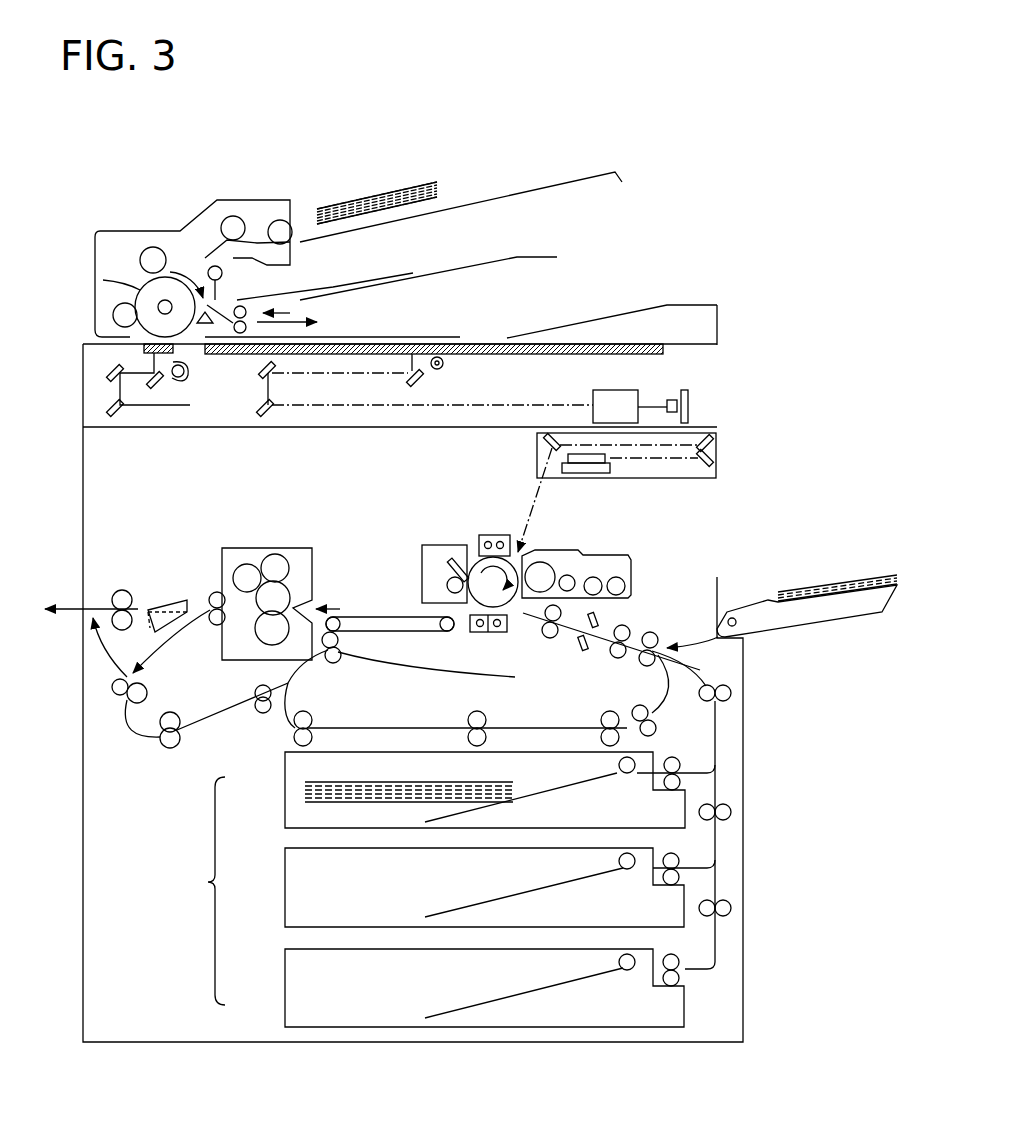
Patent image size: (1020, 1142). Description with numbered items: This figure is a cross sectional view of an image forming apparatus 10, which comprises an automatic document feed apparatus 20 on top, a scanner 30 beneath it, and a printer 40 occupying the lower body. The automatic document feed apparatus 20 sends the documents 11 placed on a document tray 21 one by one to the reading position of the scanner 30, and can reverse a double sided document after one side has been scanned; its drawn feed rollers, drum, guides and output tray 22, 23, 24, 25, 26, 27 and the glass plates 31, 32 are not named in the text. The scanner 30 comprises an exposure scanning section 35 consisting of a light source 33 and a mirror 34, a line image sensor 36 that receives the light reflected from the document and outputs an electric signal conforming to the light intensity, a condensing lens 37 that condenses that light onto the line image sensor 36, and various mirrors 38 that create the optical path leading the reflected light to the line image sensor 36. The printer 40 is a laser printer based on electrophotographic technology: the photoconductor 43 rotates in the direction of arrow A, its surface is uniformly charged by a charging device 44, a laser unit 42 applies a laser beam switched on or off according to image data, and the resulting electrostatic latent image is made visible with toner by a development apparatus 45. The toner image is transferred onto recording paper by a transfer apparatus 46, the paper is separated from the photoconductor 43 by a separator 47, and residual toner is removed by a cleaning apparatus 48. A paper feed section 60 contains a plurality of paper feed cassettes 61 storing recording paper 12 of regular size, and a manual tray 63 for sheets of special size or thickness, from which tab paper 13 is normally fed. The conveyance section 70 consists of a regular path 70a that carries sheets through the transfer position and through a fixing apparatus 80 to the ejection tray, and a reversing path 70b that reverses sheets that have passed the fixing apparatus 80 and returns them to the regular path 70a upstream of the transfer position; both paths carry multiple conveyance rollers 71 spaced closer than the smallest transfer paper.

The image forming apparatus 10 is at (645, 140).
The documents 11 is at (413, 200).
The recording paper 12 is at (352, 803).
The tab paper 13 is at (845, 590).
The automatic document feed apparatus 20 is at (317, 175).
The document tray 21 is at (563, 183).
The pickup rollers 22 is at (278, 220).
The feed drum 23 is at (135, 298).
The pinch rollers 24 is at (140, 260).
The document conveyance path 25 is at (180, 263).
The discharge rollers 26 is at (240, 306).
The document discharge tray 27 is at (535, 257).
The scanner 30 is at (722, 376).
The document reading glass 31 is at (142, 348).
The platen glass 32 is at (482, 344).
The light source 33 is at (415, 344).
The mirror 34 is at (420, 384).
The exposure scanning section 35 is at (444, 365).
The line image sensor 36 is at (684, 390).
The condensing lens 37 is at (614, 390).
The mirrors 38 is at (258, 378).
The printer 40 is at (746, 778).
The laser unit 42 is at (667, 480).
The photoconductor 43 is at (477, 561).
The charging device 44 is at (493, 535).
The development apparatus 45 is at (602, 553).
The transfer apparatus 46 is at (497, 632).
The separator 47 is at (480, 632).
The cleaning apparatus 48 is at (422, 570).
The paper feed section 60 is at (202, 891).
The paper feed cassette 61 is at (285, 790).
The manual tray 63 is at (868, 626).
The conveyance section 70 is at (638, 621).
The regular path 70a is at (350, 603).
The reversing path 70b is at (360, 723).
The conveyance rollers 71 is at (732, 694).
The fixing apparatus 80 is at (265, 548).